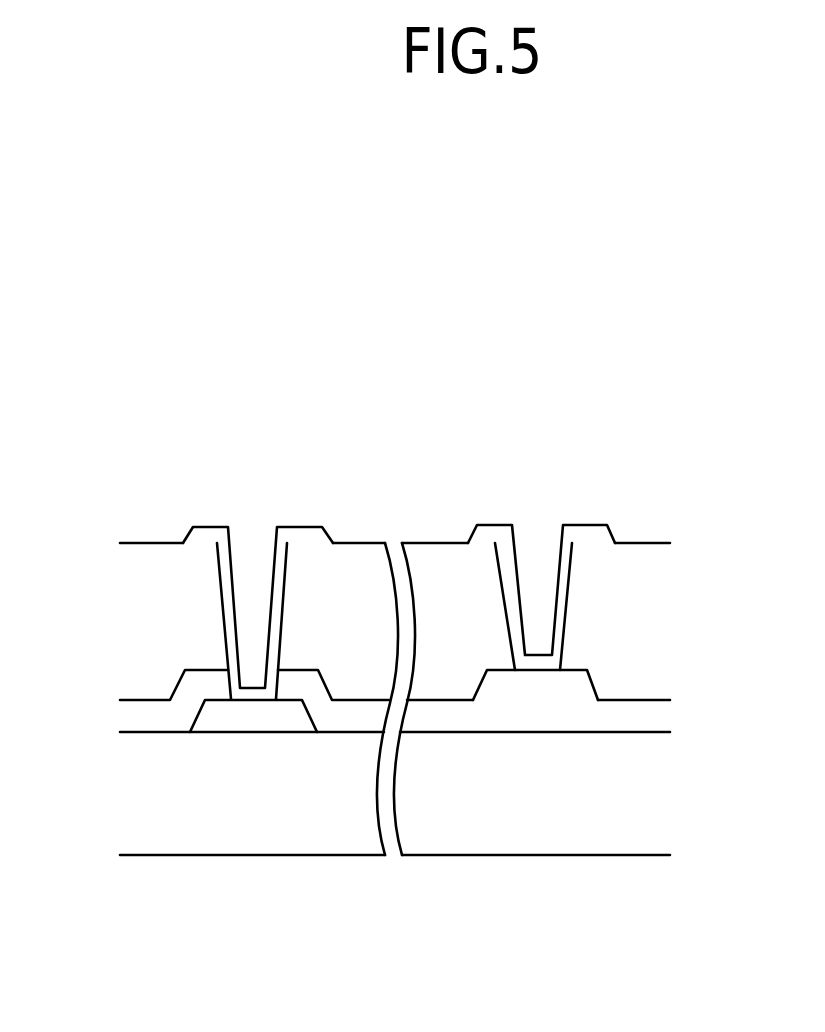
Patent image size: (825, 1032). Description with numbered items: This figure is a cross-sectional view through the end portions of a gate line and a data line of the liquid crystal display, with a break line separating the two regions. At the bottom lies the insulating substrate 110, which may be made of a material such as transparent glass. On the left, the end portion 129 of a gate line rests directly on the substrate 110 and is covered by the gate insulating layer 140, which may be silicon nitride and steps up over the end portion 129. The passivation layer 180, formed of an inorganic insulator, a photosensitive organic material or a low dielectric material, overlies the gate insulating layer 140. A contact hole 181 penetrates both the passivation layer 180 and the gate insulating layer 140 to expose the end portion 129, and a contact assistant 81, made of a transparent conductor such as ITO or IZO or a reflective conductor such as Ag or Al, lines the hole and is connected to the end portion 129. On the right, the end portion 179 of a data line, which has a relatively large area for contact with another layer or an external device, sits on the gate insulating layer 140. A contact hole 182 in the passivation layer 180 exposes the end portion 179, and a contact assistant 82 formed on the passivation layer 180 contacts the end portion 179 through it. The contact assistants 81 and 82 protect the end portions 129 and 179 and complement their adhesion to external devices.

The insulating substrate 110 is at (133, 815).
The end portion of gate line 129 is at (255, 720).
The gate insulating layer 140 is at (133, 719).
The end portion of data line 179 is at (540, 685).
The passivation layer 180 is at (133, 620).
The contact hole 181 is at (280, 578).
The contact hole 182 is at (562, 580).
The contact assistant 81 is at (308, 532).
The contact assistant 82 is at (592, 532).